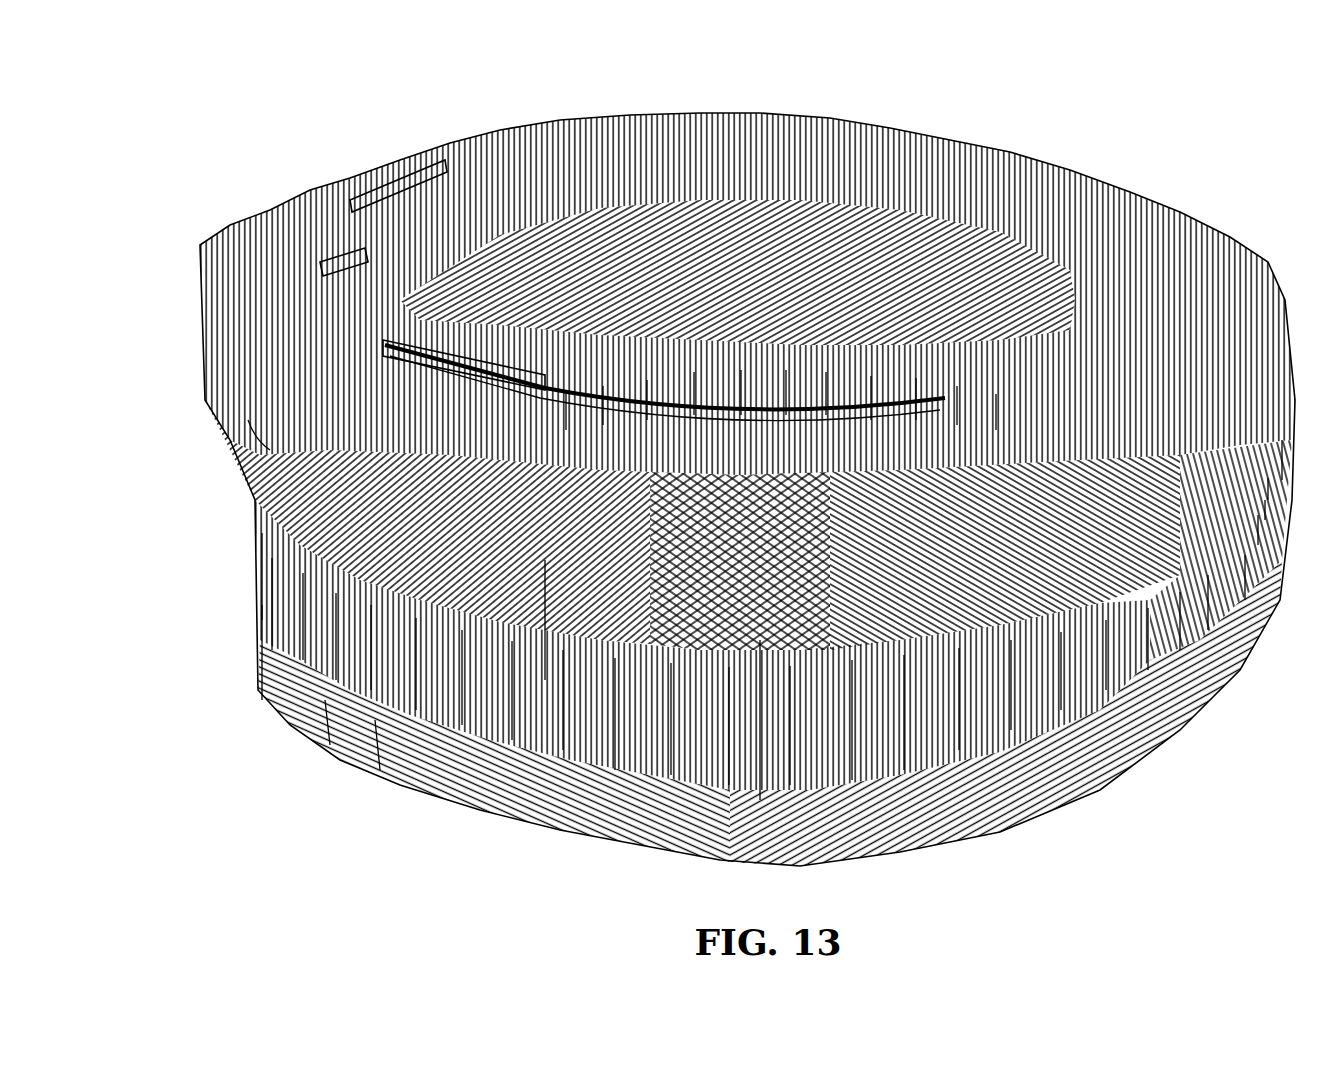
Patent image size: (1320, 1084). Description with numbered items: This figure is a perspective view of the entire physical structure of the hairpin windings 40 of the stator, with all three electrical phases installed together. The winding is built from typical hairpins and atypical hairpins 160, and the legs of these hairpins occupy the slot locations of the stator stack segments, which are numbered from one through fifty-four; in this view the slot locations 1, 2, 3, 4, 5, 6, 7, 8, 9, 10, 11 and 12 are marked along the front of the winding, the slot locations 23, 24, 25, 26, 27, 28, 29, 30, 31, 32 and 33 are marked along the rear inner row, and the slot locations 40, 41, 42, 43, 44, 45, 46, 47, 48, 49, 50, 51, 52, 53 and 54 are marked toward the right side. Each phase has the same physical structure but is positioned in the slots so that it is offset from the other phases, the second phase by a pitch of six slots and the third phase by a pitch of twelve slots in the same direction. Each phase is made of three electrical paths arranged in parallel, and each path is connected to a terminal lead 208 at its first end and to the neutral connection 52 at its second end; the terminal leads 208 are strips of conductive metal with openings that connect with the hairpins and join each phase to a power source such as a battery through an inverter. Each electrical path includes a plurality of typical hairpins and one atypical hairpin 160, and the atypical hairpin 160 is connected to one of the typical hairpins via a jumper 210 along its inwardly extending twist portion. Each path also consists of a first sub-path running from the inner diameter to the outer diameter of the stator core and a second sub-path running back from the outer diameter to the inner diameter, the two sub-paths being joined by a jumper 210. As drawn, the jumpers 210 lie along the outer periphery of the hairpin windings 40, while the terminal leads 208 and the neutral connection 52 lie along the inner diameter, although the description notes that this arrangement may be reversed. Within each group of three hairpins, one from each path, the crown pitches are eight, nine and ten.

The hairpin windings 40 is at (1168, 104).
The slot location 41 is at (1255, 484).
The slot location 42 is at (1257, 506).
The slot location 43 is at (1245, 526).
The slot location 44 is at (1247, 567).
The slot location 45 is at (1210, 590).
The slot location 46 is at (1182, 609).
The slot location 47 is at (1149, 627).
The slot location 48 is at (1107, 642).
The slot location 49 is at (1062, 659).
The slot location 50 is at (1012, 673).
The slot location 51 is at (960, 687).
The neutral connection 52 is at (972, 851).
The slot location 53 is at (853, 708).
The slot location 54 is at (791, 713).
The slot location 1 is at (730, 714).
The slot location 2 is at (672, 707).
The slot location 3 is at (616, 702).
The slot location 4 is at (564, 688).
The slot location 5 is at (513, 678).
The slot location 6 is at (463, 665).
The slot location 7 is at (417, 652).
The slot location 8 is at (372, 635).
The slot location 9 is at (337, 624).
The slot location 10 is at (304, 604).
The slot location 11 is at (273, 592).
The slot location 12 is at (248, 564).
The slot location 23 is at (567, 399).
The slot location 24 is at (604, 394).
The slot location 25 is at (648, 388).
The slot location 26 is at (695, 382).
The slot location 27 is at (742, 381).
The slot location 28 is at (787, 381).
The slot location 29 is at (827, 382).
The slot location 30 is at (872, 386).
The slot location 31 is at (917, 387).
The slot location 32 is at (958, 394).
The slot location 33 is at (997, 400).
The atypical hairpin 160 is at (262, 605).
The terminal lead 208 is at (395, 178).
The jumper 210 is at (268, 447).